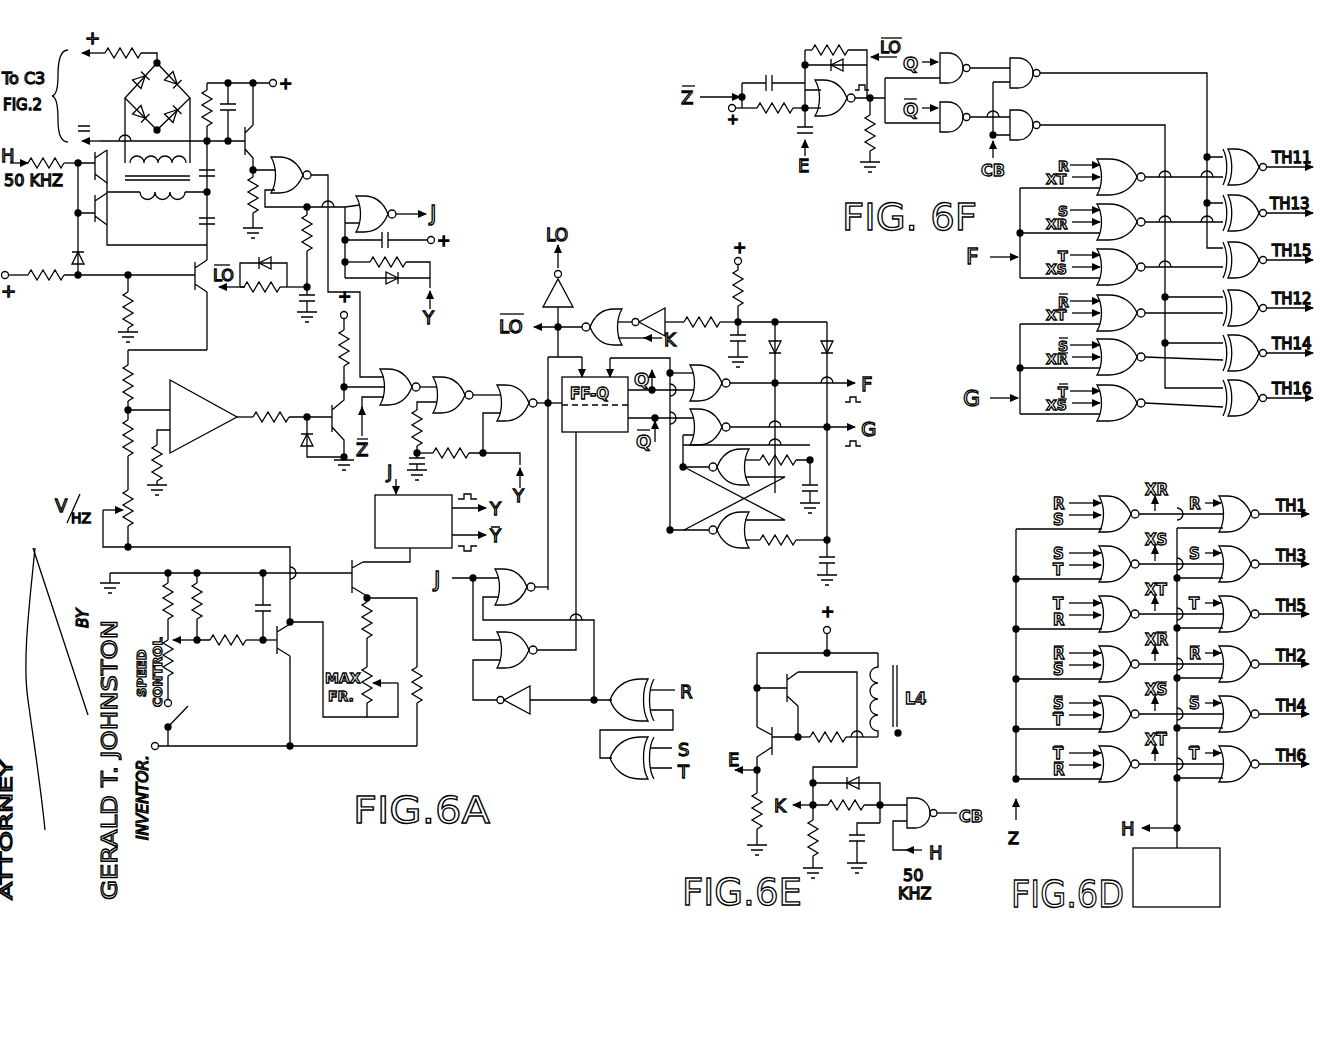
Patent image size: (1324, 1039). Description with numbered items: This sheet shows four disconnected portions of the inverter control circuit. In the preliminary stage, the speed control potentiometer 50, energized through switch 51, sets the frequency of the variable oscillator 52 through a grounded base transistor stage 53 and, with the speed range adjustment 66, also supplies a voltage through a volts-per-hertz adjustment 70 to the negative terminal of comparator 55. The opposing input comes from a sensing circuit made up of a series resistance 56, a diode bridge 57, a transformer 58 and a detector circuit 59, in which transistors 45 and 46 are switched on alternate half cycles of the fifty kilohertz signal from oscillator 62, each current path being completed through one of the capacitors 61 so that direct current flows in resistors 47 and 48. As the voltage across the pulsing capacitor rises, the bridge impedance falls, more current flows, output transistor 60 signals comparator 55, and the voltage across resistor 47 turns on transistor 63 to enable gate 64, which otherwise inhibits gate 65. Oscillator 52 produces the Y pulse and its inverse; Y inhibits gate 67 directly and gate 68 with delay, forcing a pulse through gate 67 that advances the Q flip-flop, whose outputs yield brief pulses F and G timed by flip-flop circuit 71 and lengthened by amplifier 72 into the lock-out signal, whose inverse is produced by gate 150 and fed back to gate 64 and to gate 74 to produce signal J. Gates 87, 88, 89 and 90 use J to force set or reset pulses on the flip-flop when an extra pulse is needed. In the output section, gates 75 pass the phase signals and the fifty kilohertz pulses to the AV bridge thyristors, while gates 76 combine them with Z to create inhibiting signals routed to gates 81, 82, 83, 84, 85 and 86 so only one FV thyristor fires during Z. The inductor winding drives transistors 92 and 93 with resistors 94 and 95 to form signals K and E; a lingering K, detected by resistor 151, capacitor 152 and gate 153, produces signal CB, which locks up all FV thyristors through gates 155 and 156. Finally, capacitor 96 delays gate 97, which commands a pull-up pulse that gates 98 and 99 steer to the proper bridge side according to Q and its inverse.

In FIG. 6A, the transistor 45 is at (90, 182).
In FIG. 6A, the transistor 46 is at (92, 226).
In FIG. 6A, the resistor 47 is at (207, 85).
In FIG. 6A, the resistor 48 is at (124, 383).
In FIG. 6A, the speed control potentiometer 50 is at (177, 670).
In FIG. 6A, the switch 51 is at (185, 714).
In FIG. 6A, the variable oscillator 52 is at (375, 514).
In FIG. 6A, the grounded base transistor stage 53 is at (350, 566).
In FIG. 6A, the comparator 55 is at (204, 394).
In FIG. 6A, the series resistance 56 is at (141, 53).
In FIG. 6A, the diode bridge 57 is at (170, 108).
In FIG. 6A, the transformer 58 is at (125, 177).
In FIG. 6A, the detector circuit 59 is at (172, 228).
In FIG. 6A, the output transistor 60 is at (183, 270).
In FIG. 6A, the capacitors 61 is at (214, 220).
In FIG. 6D, the 50 kHz oscillator 62 is at (1222, 862).
In FIG. 6A, the output transistor 63 is at (252, 149).
In FIG. 6A, the gate 64 is at (300, 163).
In FIG. 6A, the gate 65 is at (396, 373).
In FIG. 6A, the speed range adjustment 66 is at (372, 676).
In FIG. 6A, the gate 67 is at (517, 386).
In FIG. 6A, the gate 68 is at (452, 378).
In FIG. 6A, the volts per hertz potentiometer 70 is at (136, 519).
In FIG. 6A, the flip-flop circuit 71 is at (790, 514).
In FIG. 6A, the amplifier 72 is at (652, 306).
In FIG. 6A, the gate 74 is at (386, 197).
In FIG. 6D, the gates 75 is at (1252, 760).
In FIG. 6D, the gates 76 is at (1130, 758).
In FIG. 6F, the gate 81 is at (1128, 166).
In FIG. 6F, the gate 82 is at (1128, 211).
In FIG. 6F, the gate 83 is at (1128, 256).
In FIG. 6F, the gate 84 is at (1128, 302).
In FIG. 6F, the gate 85 is at (1128, 346).
In FIG. 6F, the gate 86 is at (1128, 392).
In FIG. 6A, the gate 87 is at (630, 785).
In FIG. 6A, the gate 88 is at (616, 683).
In FIG. 6A, the gate 89 is at (530, 662).
In FIG. 6A, the gate 90 is at (515, 572).
In FIG. 6E, the transistor 92 is at (792, 684).
In FIG. 6E, the transistor 93 is at (776, 755).
In FIG. 6E, the resistor 94 is at (819, 734).
In FIG. 6E, the resistor 95 is at (799, 849).
In FIG. 6F, the capacitor 96 is at (768, 80).
In FIG. 6F, the gate 97 is at (835, 120).
In FIG. 6F, the gate 98 is at (966, 58).
In FIG. 6F, the gate 99 is at (958, 133).
In FIG. 6A, the NOR gate 150 is at (600, 312).
In FIG. 6E, the resistor 151 is at (845, 821).
In FIG. 6E, the capacitor 152 is at (866, 848).
In FIG. 6E, the gate 153 is at (926, 802).
In FIG. 6F, the gate 155 is at (1037, 66).
In FIG. 6F, the gate 156 is at (1037, 118).